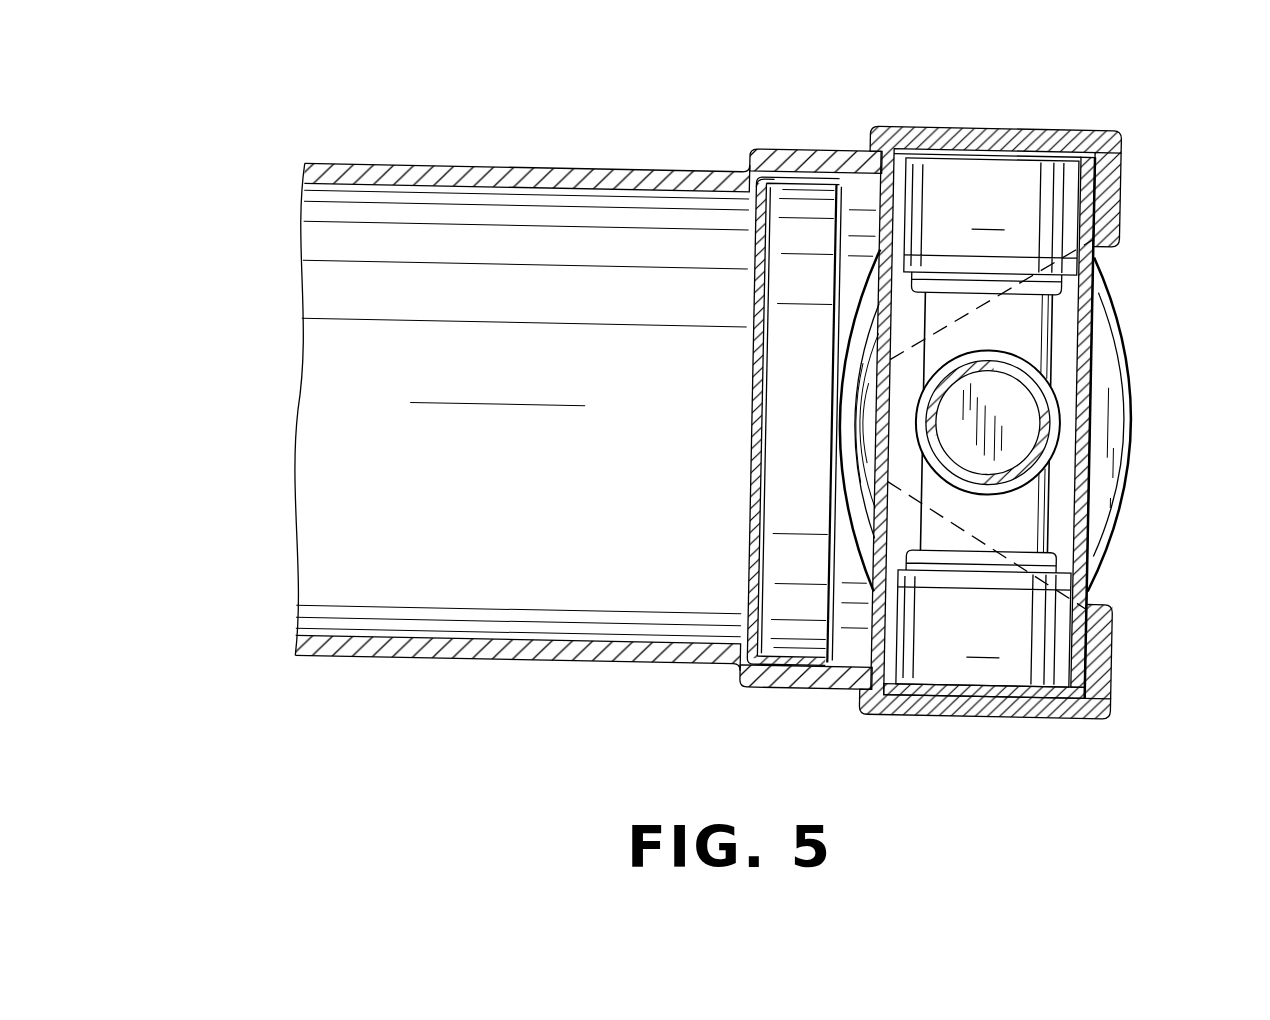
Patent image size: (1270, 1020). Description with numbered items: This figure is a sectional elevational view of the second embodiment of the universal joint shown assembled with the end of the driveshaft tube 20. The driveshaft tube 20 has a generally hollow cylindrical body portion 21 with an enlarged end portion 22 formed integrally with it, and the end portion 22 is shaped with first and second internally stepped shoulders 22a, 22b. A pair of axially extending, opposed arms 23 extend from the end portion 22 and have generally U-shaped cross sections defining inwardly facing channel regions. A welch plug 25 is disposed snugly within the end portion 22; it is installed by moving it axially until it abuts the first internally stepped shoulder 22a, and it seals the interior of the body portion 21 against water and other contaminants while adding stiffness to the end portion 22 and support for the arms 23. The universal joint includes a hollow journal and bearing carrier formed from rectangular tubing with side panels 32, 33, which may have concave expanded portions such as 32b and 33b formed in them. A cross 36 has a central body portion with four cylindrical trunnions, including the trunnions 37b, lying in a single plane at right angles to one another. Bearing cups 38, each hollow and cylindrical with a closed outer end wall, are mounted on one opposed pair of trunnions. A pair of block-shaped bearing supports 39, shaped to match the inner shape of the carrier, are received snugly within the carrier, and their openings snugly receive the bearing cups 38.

The driveshaft tube 20 is at (360, 714).
The body portion 21 is at (455, 178).
The end portion 22 is at (876, 123).
The first internally stepped shoulder 22a is at (776, 188).
The second internally stepped shoulder 22b is at (905, 152).
The arms 23 is at (1052, 121).
The welch plug 25 is at (790, 406).
The side panel 32 is at (1096, 307).
The concave expanded portion 32b is at (1116, 482).
The side panel 33 is at (878, 312).
The concave expanded portion 33b is at (857, 492).
The cross 36 is at (1039, 339).
The trunnion 37b is at (1030, 422).
The bearing cups 38 is at (987, 422).
The bearing supports 39 is at (1081, 181).